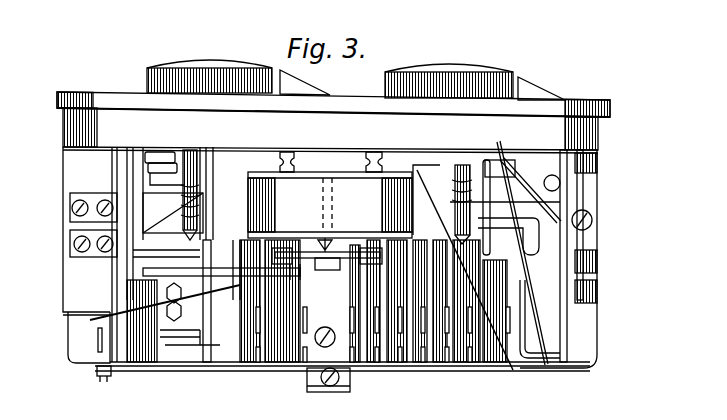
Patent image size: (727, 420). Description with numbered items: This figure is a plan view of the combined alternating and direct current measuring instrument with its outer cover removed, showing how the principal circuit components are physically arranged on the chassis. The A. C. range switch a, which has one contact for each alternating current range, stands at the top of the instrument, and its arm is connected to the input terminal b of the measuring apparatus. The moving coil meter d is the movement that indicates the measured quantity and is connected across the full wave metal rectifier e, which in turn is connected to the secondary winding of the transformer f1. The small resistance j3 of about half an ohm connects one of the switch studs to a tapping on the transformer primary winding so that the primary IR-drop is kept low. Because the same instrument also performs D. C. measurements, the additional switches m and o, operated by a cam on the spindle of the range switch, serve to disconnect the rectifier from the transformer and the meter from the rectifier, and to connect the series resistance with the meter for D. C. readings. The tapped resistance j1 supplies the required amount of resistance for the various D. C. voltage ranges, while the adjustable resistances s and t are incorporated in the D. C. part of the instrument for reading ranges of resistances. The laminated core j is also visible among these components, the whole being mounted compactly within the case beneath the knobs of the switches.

The A. C. range switch a is at (160, 67).
The input terminal b is at (460, 88).
The moving coil meter d is at (345, 202).
The adjustable resistance s is at (145, 155).
The additional switch o is at (70, 208).
The additional switch m is at (72, 244).
The full wave metal rectifier e is at (110, 374).
The adjustable resistance t is at (521, 241).
The small resistance j3 is at (238, 250).
The resistance j1 is at (240, 372).
The laminated core j is at (462, 372).
The transformer f1 is at (307, 384).